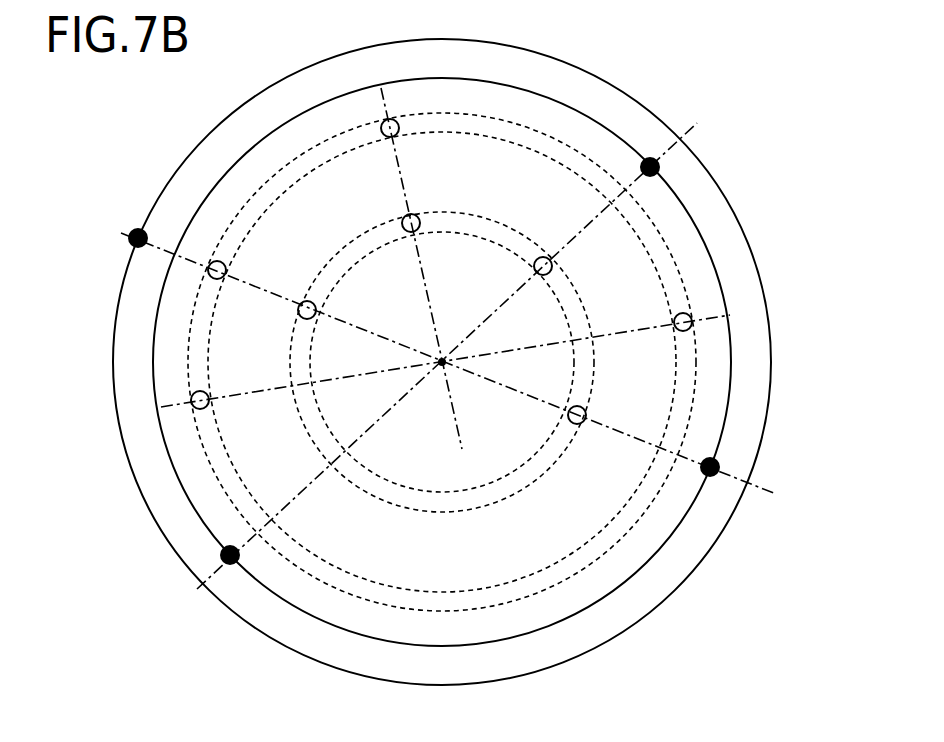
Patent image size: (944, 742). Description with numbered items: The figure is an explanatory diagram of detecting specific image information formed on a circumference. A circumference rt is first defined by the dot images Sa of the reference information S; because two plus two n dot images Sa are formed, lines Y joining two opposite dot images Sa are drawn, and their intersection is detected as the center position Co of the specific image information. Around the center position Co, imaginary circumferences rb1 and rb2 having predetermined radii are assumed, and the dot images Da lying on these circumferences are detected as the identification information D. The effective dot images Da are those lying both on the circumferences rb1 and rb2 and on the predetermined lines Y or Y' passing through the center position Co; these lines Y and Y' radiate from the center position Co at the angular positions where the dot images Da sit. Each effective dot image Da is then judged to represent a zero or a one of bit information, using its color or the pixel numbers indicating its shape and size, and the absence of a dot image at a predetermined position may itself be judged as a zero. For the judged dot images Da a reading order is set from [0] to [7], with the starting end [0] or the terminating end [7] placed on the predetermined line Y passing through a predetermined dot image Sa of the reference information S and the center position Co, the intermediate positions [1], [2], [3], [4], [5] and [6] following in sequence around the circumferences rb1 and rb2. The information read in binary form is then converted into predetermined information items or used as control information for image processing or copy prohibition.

The circumference rt is at (598, 98).
The reference information S is at (646, 160).
The dot image Sa is at (138, 228).
The dot image Da is at (441, 258).
The center position Co is at (449, 343).
The identification information D is at (442, 366).
The circumference rb1 is at (455, 500).
The circumference rb2 is at (549, 577).
The starting end of reading order 0 is at (288, 311).
The reading order position 1 is at (418, 209).
The reading order position 2 is at (560, 262).
The reading order position 3 is at (592, 412).
The reading order position 4 is at (213, 391).
The reading order position 5 is at (232, 268).
The reading order position 6 is at (397, 114).
The terminating end of reading order 7 is at (663, 317).
The line Y is at (440, 364).
The line Y' is at (444, 265).